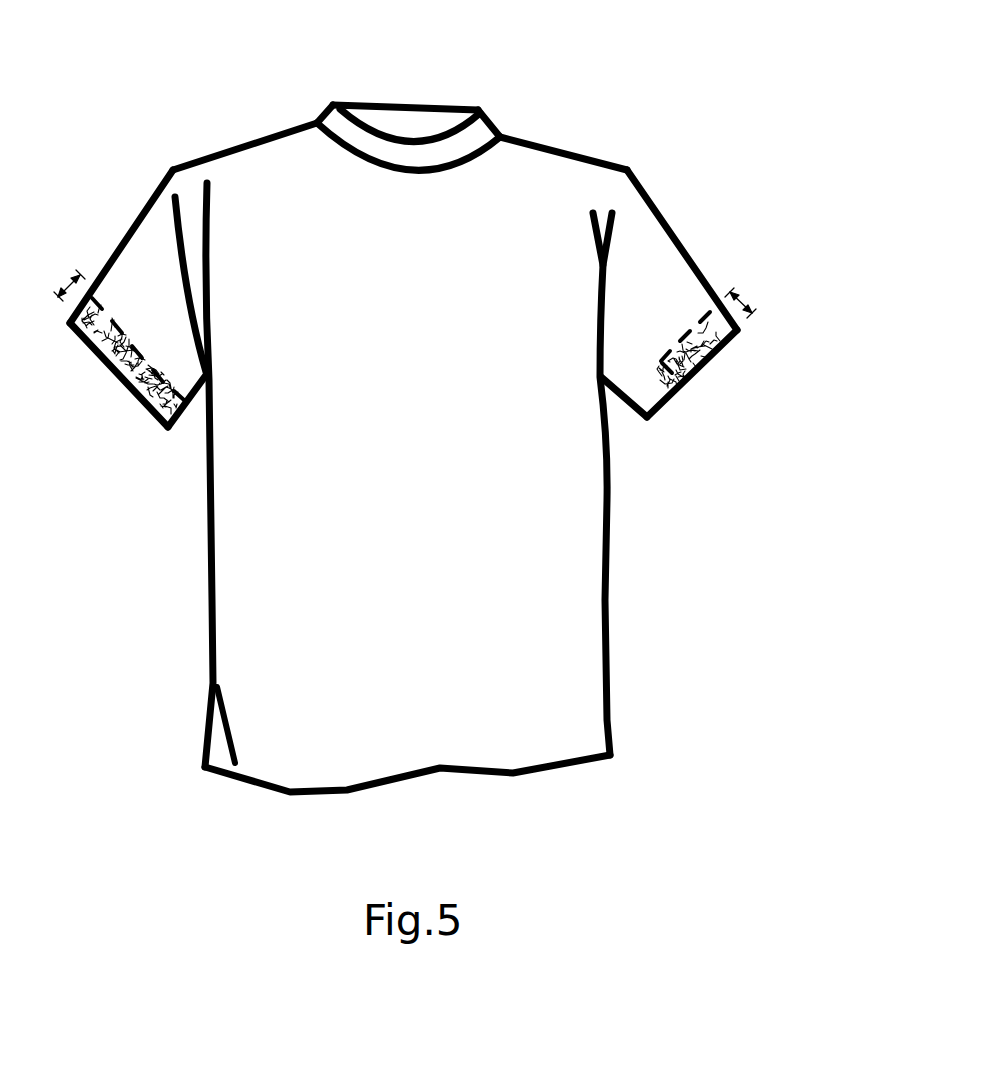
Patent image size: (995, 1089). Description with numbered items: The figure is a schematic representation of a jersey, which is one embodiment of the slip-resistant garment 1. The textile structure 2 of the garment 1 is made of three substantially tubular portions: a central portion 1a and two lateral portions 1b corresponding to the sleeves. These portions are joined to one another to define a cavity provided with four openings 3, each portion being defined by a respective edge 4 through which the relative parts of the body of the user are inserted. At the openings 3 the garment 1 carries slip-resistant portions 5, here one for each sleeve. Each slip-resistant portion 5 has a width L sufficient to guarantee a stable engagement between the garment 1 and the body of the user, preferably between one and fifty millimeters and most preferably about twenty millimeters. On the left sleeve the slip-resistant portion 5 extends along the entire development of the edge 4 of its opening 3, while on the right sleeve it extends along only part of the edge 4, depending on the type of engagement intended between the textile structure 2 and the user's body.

The slip-resistant garment 1 is at (645, 118).
The central portion 1a is at (418, 440).
The lateral portions 1b is at (178, 305).
The textile structure 2 is at (560, 150).
The openings 3 is at (427, 123).
The edge 4 is at (393, 104).
The slip-resistant portion 5 is at (92, 357).
The width L is at (73, 280).